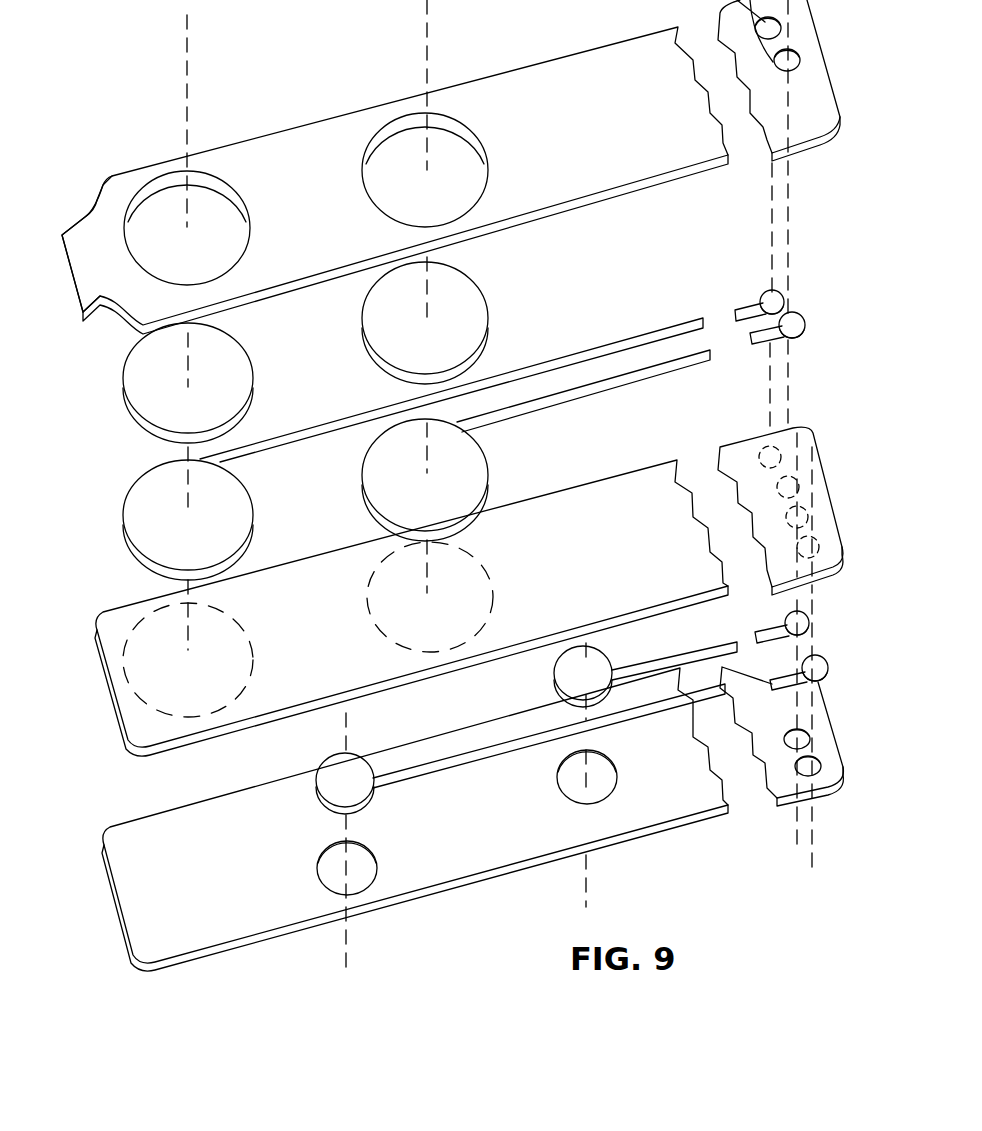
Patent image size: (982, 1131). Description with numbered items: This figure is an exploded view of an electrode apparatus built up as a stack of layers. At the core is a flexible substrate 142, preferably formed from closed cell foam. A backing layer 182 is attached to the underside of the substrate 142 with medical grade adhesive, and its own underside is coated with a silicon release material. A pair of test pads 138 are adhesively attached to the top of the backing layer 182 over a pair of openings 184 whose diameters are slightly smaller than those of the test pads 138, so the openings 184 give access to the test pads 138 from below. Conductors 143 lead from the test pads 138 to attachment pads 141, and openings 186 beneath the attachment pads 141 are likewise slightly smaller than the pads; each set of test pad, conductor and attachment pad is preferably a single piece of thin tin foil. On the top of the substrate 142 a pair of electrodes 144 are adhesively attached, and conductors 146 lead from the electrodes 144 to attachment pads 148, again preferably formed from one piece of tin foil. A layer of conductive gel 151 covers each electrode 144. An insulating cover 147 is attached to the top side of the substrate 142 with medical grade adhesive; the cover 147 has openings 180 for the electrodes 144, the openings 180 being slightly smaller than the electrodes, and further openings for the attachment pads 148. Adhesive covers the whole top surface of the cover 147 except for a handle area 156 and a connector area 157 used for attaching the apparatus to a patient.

The test pads 138 is at (350, 793).
The attachment pads 141 is at (800, 666).
The substrate 142 is at (550, 505).
The conductors 143 is at (640, 713).
The electrodes 144 is at (162, 500).
The conductors 146 is at (338, 422).
The insulating cover 147 is at (307, 147).
The attachment pads 148 is at (760, 318).
The conductive gel 151 is at (388, 325).
The handle area 156 is at (83, 250).
The connector area 157 is at (802, 118).
The openings 180 is at (158, 202).
The backing layer 182 is at (202, 923).
The openings 184 is at (597, 793).
The openings 186 is at (805, 770).